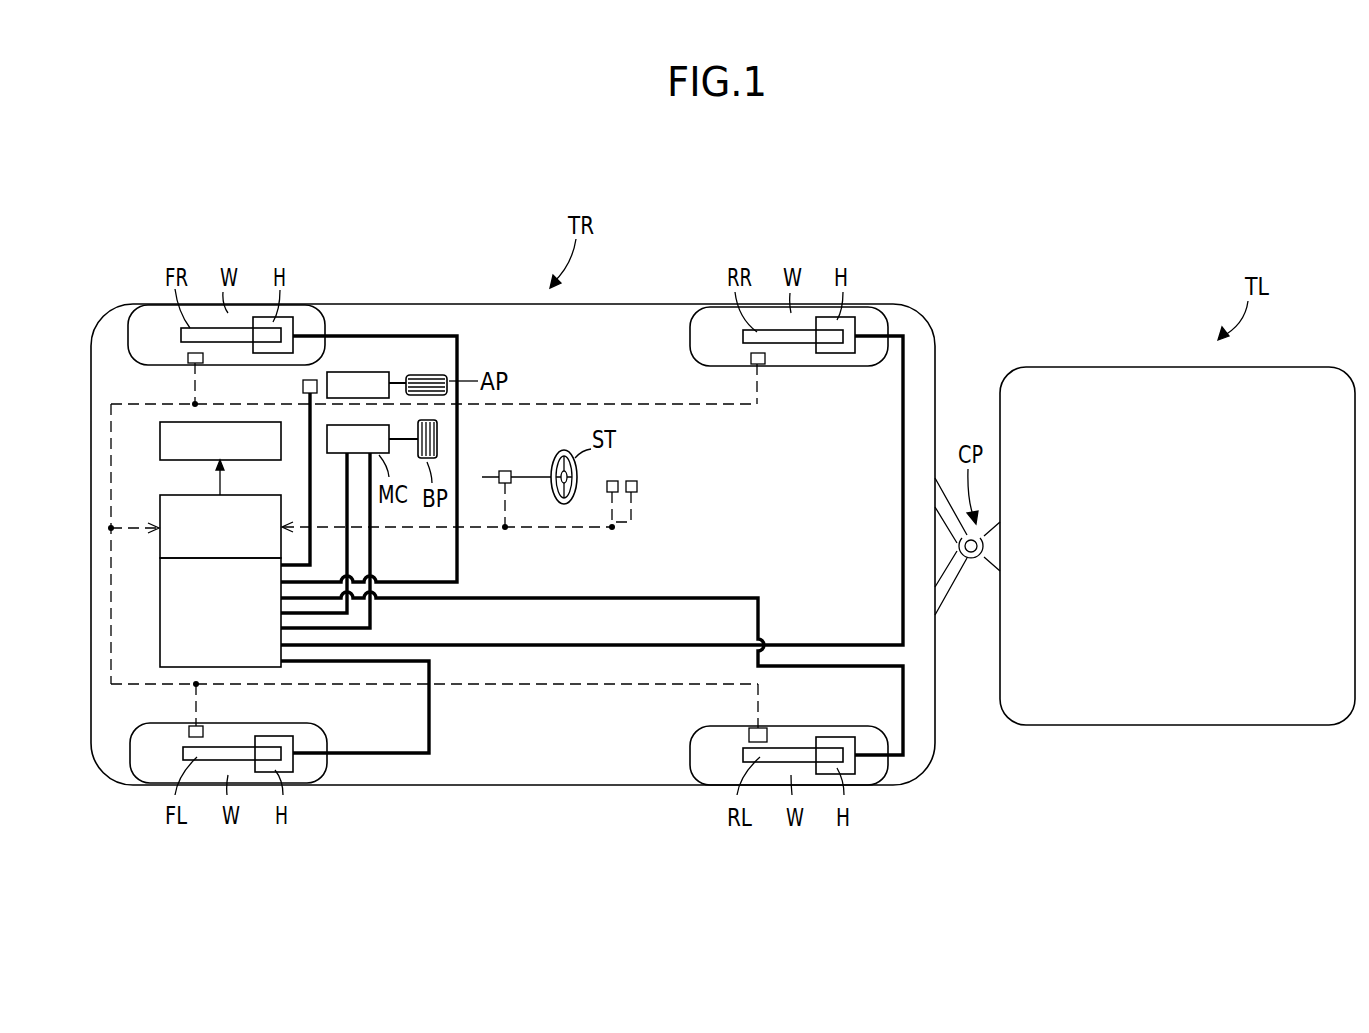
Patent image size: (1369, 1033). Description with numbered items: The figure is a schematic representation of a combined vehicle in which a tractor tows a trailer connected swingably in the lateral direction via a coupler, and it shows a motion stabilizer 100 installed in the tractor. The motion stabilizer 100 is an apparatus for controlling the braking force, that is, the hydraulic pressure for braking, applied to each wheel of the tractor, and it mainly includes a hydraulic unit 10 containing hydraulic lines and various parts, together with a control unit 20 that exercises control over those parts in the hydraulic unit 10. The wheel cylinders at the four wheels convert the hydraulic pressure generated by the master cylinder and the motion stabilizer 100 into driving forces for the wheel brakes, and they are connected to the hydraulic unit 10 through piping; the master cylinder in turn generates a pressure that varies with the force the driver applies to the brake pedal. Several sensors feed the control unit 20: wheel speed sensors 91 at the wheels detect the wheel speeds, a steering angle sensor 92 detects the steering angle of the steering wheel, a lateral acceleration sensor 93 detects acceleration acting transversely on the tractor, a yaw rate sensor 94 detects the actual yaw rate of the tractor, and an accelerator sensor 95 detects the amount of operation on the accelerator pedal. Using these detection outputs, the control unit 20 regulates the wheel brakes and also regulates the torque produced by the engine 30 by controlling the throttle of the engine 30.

The motion stabilizer 100 is at (151, 562).
The hydraulic unit 10 is at (160, 620).
The control unit 20 is at (160, 500).
The engine 30 is at (160, 434).
The wheel speed sensors 91 is at (190, 358).
The steering angle sensor 92 is at (500, 472).
The lateral acceleration sensor 93 is at (613, 480).
The yaw rate sensor 94 is at (637, 487).
The accelerator sensor 95 is at (303, 387).